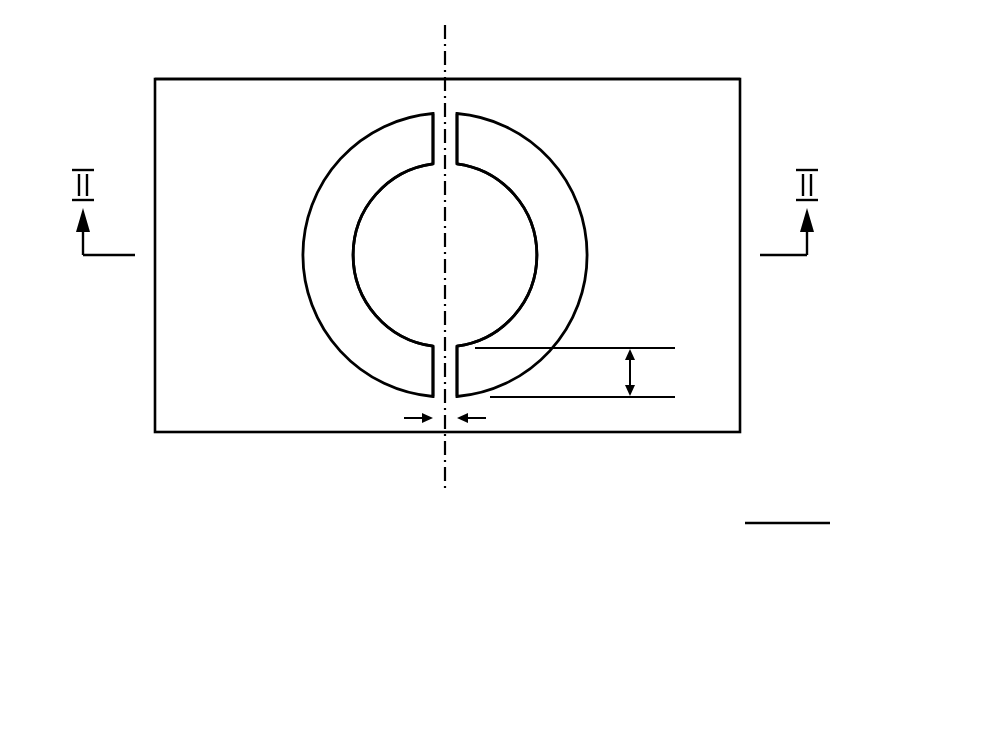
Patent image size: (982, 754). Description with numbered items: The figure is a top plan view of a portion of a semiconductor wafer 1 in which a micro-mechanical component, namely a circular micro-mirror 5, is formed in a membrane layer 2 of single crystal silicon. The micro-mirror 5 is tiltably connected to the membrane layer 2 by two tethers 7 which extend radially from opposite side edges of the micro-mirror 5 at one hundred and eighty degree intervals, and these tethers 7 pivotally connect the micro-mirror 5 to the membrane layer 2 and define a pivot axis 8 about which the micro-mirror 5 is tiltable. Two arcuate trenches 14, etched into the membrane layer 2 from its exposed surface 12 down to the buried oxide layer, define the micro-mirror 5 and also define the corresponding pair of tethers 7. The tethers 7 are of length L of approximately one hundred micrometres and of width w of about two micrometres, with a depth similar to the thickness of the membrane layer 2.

The semiconductor wafer 1 is at (776, 42).
The membrane layer 2 is at (724, 118).
The micro-mirror 5 is at (510, 212).
The tether 7 is at (450, 135).
The pivot axis 8 is at (446, 455).
The exposed surface 12 is at (619, 86).
The trench 14 is at (569, 273).